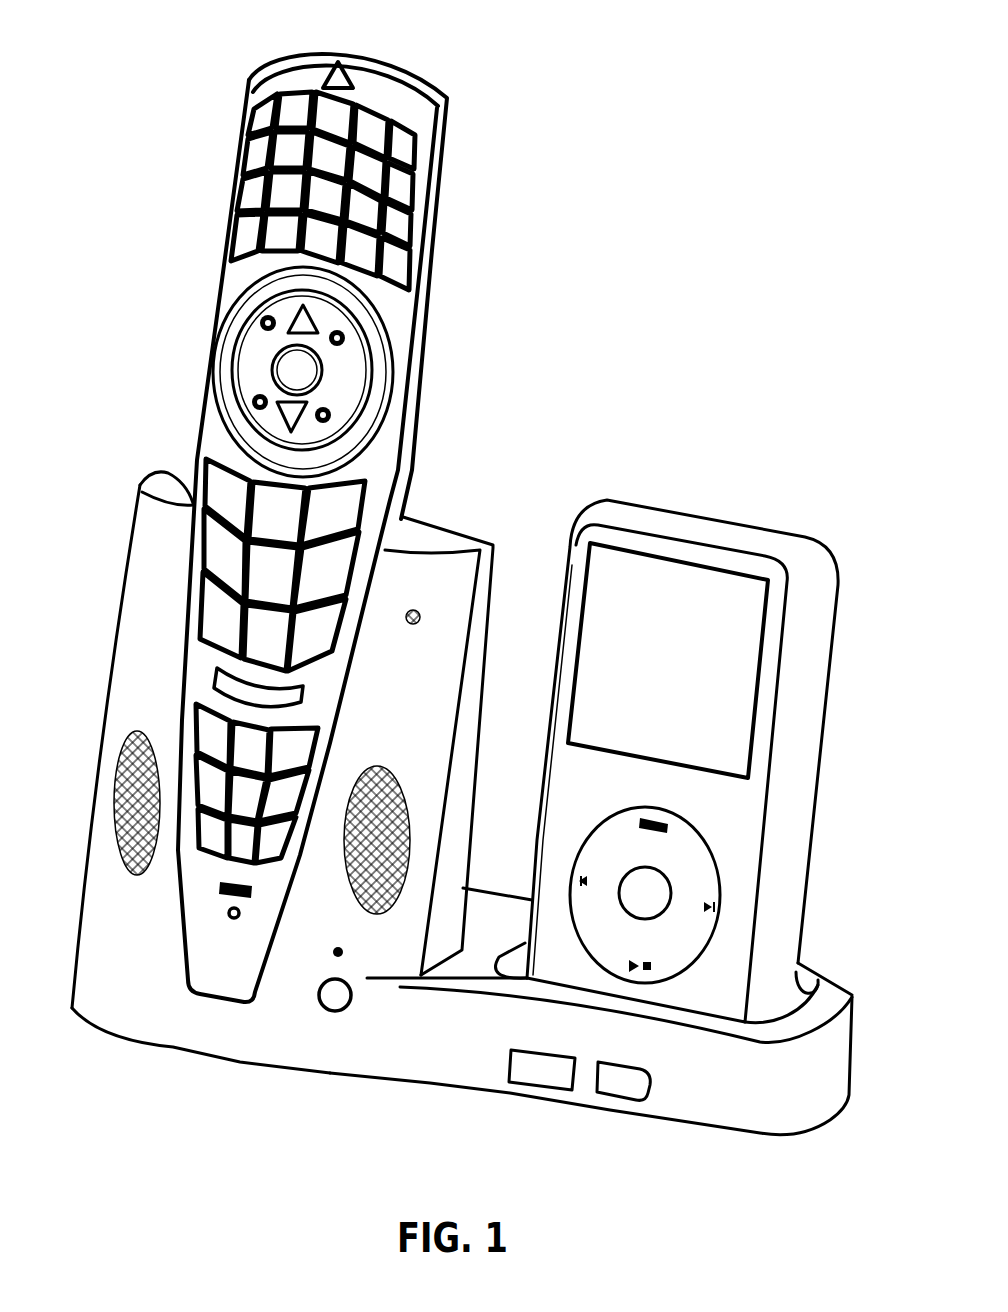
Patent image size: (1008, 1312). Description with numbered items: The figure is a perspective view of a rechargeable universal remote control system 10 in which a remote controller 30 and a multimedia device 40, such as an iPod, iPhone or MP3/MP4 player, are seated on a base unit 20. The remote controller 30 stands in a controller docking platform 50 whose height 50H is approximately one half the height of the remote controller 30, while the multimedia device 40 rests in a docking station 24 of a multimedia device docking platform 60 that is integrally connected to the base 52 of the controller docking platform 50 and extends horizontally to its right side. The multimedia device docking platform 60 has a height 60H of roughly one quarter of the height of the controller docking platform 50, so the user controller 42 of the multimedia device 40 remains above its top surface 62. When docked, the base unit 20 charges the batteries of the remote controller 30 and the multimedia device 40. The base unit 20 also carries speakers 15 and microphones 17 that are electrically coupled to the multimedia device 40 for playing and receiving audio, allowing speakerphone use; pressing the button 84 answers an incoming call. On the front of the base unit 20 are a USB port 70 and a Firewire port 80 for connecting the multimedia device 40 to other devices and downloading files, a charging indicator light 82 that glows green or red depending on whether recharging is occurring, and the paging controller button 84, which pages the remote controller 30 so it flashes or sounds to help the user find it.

The rechargeable universal remote control system 10 is at (648, 183).
The speakers 15 is at (155, 872).
The microphones 17 is at (403, 620).
The base unit 20 is at (360, 1112).
The docking station 24 is at (506, 950).
The remote controller 30 is at (446, 82).
The multimedia device 40 is at (668, 500).
The user controller 42 is at (718, 850).
The controller docking platform 50 is at (441, 512).
The base 52 is at (180, 1022).
The multimedia device docking platform 60 is at (813, 962).
The top surface 62 is at (826, 993).
The universal serial bus (USB) port 70 is at (541, 1068).
The Firewire port 80 is at (624, 1088).
The charging indicator light 82 is at (324, 950).
The paging controller button 84 is at (365, 1002).
The height of the controller docking platform 50H is at (108, 490).
The height of the multimedia device docking platform 60H is at (867, 1003).